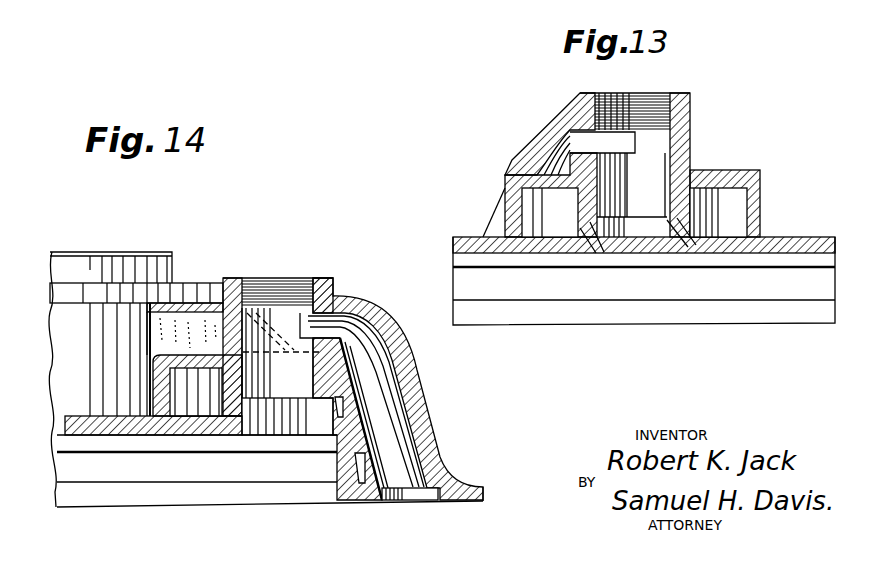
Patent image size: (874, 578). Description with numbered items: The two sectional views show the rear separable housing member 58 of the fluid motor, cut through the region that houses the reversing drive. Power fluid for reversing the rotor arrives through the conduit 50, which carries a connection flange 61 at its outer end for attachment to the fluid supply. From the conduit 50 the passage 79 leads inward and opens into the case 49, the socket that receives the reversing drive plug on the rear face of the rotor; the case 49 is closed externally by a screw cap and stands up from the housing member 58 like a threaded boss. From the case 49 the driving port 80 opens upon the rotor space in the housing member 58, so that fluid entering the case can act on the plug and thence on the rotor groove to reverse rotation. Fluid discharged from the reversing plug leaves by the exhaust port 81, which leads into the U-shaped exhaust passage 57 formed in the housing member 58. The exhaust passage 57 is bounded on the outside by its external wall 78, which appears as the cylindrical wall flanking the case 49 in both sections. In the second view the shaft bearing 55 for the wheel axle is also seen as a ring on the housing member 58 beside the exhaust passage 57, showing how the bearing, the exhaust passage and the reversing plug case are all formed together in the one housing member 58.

In FIG. 13, the case 49 is at (685, 145).
In FIG. 14, the case 49 is at (300, 278).
In FIG. 13, the conduit 50 is at (530, 160).
In FIG. 14, the conduit 50 is at (423, 398).
In FIG. 14, the shaft bearing 55 is at (175, 283).
In FIG. 13, the exhaust passage 57 is at (634, 212).
In FIG. 14, the exhaust passage 57 is at (204, 378).
In FIG. 13, the housing member 58 is at (782, 312).
In FIG. 14, the housing member 58 is at (225, 492).
In FIG. 14, the connection flange 61 is at (483, 491).
In FIG. 13, the external wall 78 is at (748, 173).
In FIG. 14, the external wall 78 is at (155, 360).
In FIG. 13, the passage 79 is at (573, 142).
In FIG. 14, the passage 79 is at (417, 480).
In FIG. 13, the driving port 80 is at (689, 247).
In FIG. 13, the exhaust port 81 is at (588, 247).